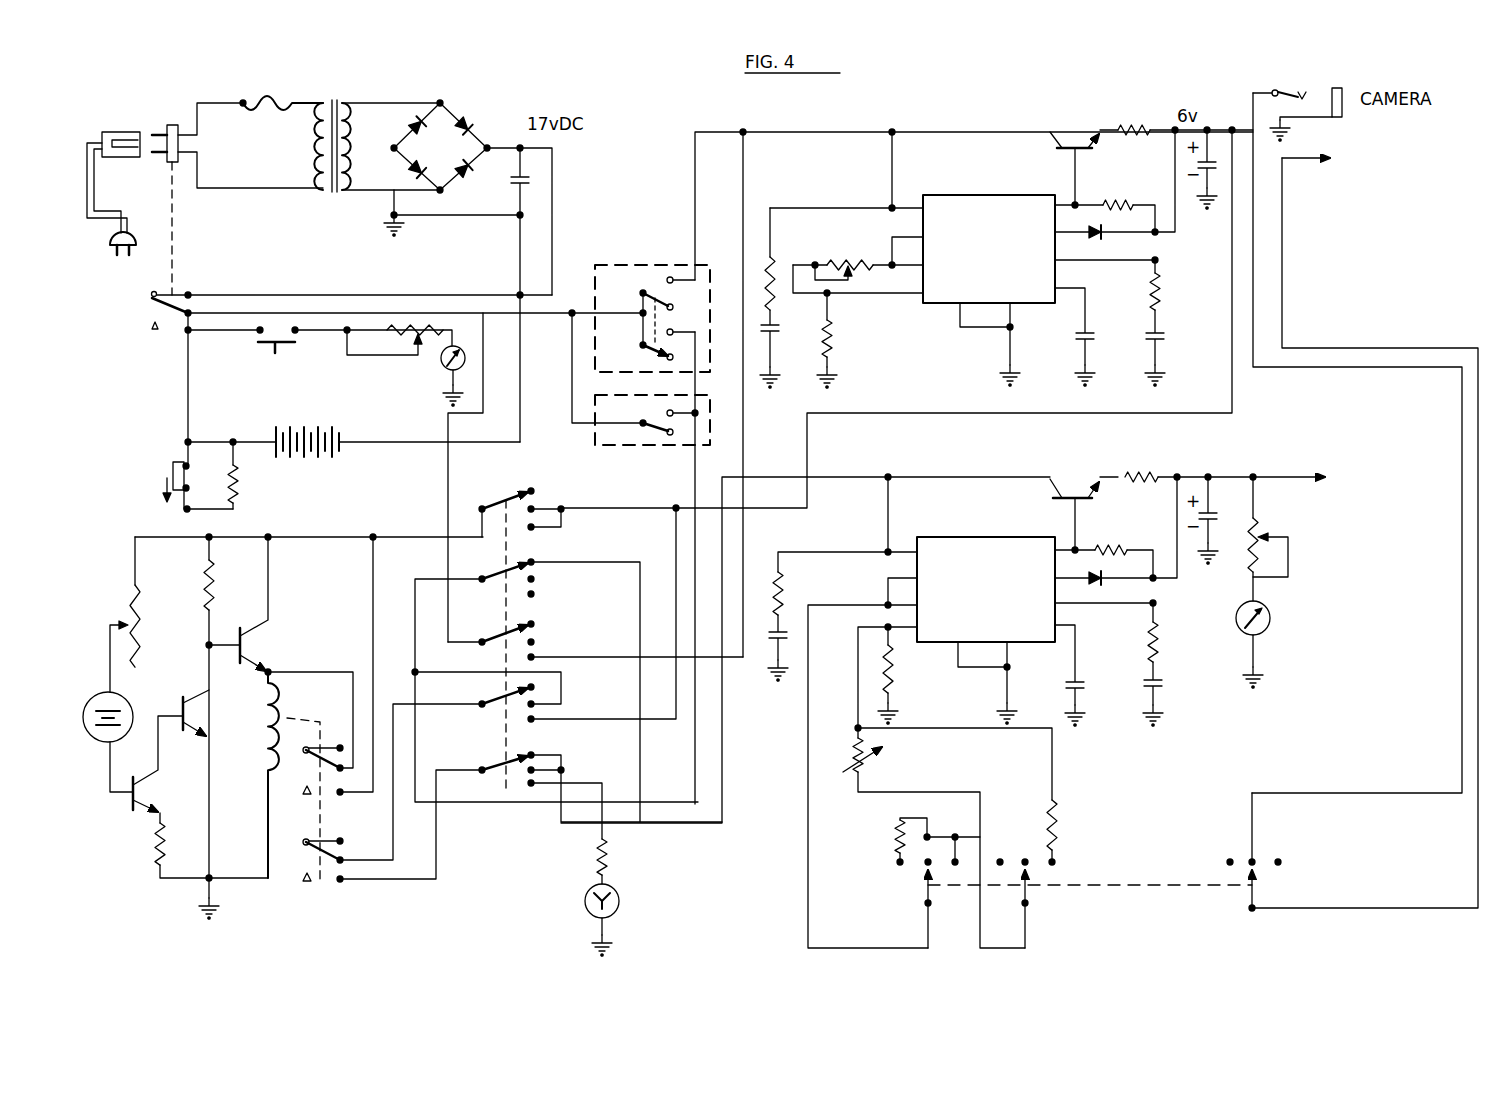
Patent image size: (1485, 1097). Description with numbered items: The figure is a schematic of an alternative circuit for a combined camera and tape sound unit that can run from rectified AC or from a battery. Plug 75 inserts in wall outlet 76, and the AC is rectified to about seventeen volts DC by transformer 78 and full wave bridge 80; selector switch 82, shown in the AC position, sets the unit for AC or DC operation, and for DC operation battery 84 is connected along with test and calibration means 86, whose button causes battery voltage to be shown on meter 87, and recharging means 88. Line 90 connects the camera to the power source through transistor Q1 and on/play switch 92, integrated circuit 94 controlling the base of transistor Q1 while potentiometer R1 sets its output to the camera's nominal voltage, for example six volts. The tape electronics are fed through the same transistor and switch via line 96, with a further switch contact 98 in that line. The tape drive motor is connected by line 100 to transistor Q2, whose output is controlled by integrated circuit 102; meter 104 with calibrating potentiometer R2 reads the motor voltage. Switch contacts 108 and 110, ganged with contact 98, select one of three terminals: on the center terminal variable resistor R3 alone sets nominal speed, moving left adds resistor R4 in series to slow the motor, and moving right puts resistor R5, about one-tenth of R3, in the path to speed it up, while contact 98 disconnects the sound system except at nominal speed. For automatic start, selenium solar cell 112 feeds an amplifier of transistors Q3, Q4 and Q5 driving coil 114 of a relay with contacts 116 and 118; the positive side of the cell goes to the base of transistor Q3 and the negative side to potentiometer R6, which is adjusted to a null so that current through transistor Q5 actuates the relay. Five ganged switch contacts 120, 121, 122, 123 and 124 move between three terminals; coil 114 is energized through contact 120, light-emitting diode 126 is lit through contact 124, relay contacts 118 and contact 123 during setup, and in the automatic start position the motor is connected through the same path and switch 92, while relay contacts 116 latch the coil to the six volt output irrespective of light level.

The plug 75 is at (177, 125).
The wall outlet 76 is at (120, 132).
The transformer 78 is at (331, 97).
The full wave bridge 80 is at (487, 125).
The selector switch 82 is at (150, 315).
The battery 84 is at (307, 427).
The test and calibration means 86 is at (270, 352).
The meter 87 is at (442, 367).
The recharging means 88 is at (173, 450).
The line 90 is at (1285, 93).
The switch 92 is at (632, 265).
The integrated circuit 94 is at (990, 193).
The line 96 is at (1303, 162).
The switch contact 98 is at (1250, 893).
The line 100 is at (1302, 473).
The integrated circuit 102 is at (963, 537).
The meter 104 is at (1270, 617).
The switch contact 108 is at (1028, 893).
The switch contact 110 is at (925, 893).
The selenium solar cell 112 is at (123, 702).
The coil 114 is at (262, 747).
The relay contacts 116 is at (313, 760).
The relay contacts 118 is at (310, 850).
The switch contact 120 is at (520, 492).
The switch contact 121 is at (520, 563).
The switch contact 122 is at (520, 627).
The switch contact 123 is at (535, 688).
The switch contact 124 is at (522, 758).
The light-emitting diode 126 is at (619, 894).
The transistor Q1 is at (1063, 145).
The transistor Q2 is at (1063, 492).
The transistor Q3 is at (147, 785).
The transistor Q4 is at (197, 698).
The transistor Q5 is at (262, 628).
The potentiometer R1 is at (830, 263).
The calibrating potentiometer R2 is at (1258, 524).
The variable resistor R3 is at (853, 752).
The resistor R4 is at (895, 837).
The resistor R5 is at (1058, 810).
The potentiometer R6 is at (145, 610).